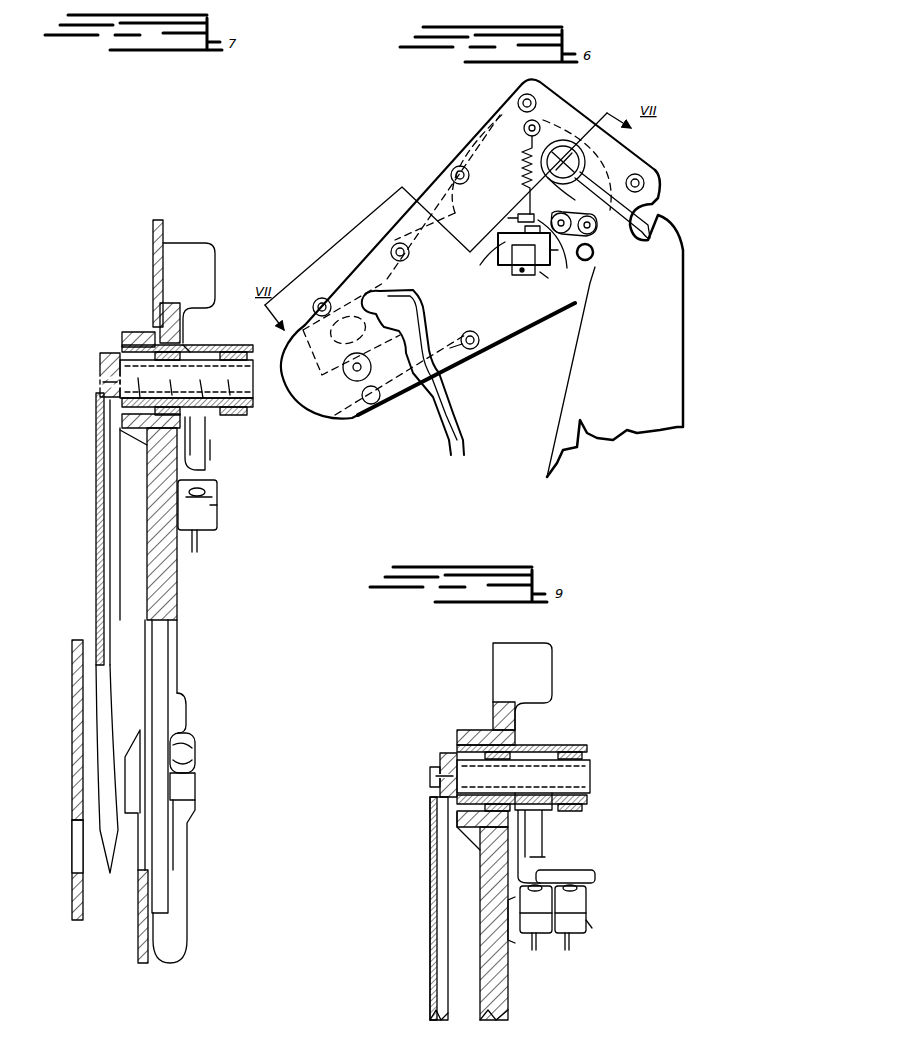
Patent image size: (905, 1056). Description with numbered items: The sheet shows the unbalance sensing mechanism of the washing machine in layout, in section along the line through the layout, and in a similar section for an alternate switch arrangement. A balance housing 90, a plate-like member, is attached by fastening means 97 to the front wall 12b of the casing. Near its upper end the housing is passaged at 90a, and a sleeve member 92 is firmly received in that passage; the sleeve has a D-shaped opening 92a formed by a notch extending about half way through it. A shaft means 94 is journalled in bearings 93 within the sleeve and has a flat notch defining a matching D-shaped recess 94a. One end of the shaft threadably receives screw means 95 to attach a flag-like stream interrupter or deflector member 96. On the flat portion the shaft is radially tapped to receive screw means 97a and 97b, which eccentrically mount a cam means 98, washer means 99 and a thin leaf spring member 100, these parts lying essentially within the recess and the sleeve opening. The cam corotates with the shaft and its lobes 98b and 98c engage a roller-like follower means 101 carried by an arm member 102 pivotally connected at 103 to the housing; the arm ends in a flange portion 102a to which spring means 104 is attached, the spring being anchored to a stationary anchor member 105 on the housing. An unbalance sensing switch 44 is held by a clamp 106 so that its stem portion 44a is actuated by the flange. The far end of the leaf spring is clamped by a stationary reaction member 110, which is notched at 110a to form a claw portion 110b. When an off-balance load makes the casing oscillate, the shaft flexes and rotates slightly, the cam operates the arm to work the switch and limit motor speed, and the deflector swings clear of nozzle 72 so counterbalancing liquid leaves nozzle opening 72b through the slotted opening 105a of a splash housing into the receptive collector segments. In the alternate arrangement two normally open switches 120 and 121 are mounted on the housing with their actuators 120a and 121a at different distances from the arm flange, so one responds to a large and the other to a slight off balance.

In FIG. 7, the front wall 12b is at (140, 935).
In FIG. 7, the unbalance sensing switch 44 is at (210, 522).
In FIG. 6, the unbalance sensing switch 44 is at (508, 270).
In FIG. 7, the stem portion 44a is at (217, 494).
In FIG. 6, the stem portion 44a is at (560, 252).
In FIG. 7, the nozzle 72 is at (185, 715).
In FIG. 6, the nozzle 72 is at (405, 300).
In FIG. 7, the nozzle opening 72b is at (120, 878).
In FIG. 7, the balance housing 90 is at (181, 650).
In FIG. 9, the balance housing 90 is at (490, 692).
In FIG. 7, the passage 90a is at (190, 352).
In FIG. 7, the sleeve member 92 is at (220, 349).
In FIG. 7, the D-shaped opening 92a is at (215, 413).
In FIG. 7, the bearings 93 is at (250, 365).
In FIG. 7, the shaft means 94 is at (250, 380).
In FIG. 6, the shaft means 94 is at (566, 148).
In FIG. 7, the D-shaped recess 94a is at (227, 380).
In FIG. 7, the screw means 95 is at (102, 380).
In FIG. 7, the deflector member 96 is at (97, 423).
In FIG. 6, the deflector member 96 is at (458, 354).
In FIG. 9, the deflector member 96 is at (430, 878).
In FIG. 6, the fastening means 97 is at (371, 404).
In FIG. 7, the screw means 97a is at (170, 380).
In FIG. 7, the screw means 97b is at (212, 442).
In FIG. 7, the cam means 98 is at (238, 468).
In FIG. 9, the cam means 98 is at (550, 833).
In FIG. 6, the cam lobe 98b is at (518, 216).
In FIG. 6, the cam lobe 98c is at (583, 208).
In FIG. 7, the washer means 99 is at (200, 382).
In FIG. 7, the leaf spring member 100 is at (147, 446).
In FIG. 6, the leaf spring member 100 is at (590, 195).
In FIG. 6, the follower means 101 is at (596, 257).
In FIG. 6, the arm member 102 is at (525, 229).
In FIG. 7, the flange portion 102a is at (205, 490).
In FIG. 6, the flange portion 102a is at (474, 259).
In FIG. 9, the flange portion 102a is at (595, 877).
In FIG. 6, the pivot 103 is at (603, 230).
In FIG. 6, the spring means 104 is at (522, 180).
In FIG. 7, the anchor member 105 is at (73, 716).
In FIG. 6, the anchor member 105 is at (524, 135).
In FIG. 7, the slotted opening 105a is at (262, 398).
In FIG. 7, the clamp 106 is at (217, 512).
In FIG. 6, the clamp 106 is at (545, 280).
In FIG. 9, the clamp 106 is at (592, 928).
In FIG. 6, the stationary reaction member 110 is at (667, 360).
In FIG. 6, the notch 110a is at (658, 233).
In FIG. 6, the claw portion 110b is at (662, 206).
In FIG. 9, the unbalance sensing switch 120 is at (520, 928).
In FIG. 9, the actuator 120a is at (548, 872).
In FIG. 9, the unbalance sensing switch 121 is at (590, 915).
In FIG. 9, the actuator 121a is at (592, 905).